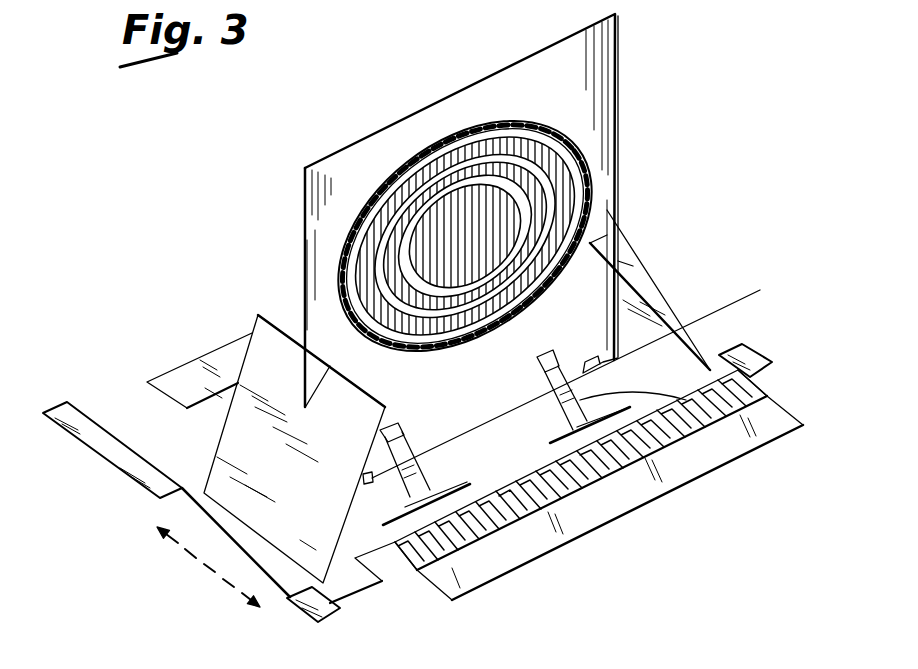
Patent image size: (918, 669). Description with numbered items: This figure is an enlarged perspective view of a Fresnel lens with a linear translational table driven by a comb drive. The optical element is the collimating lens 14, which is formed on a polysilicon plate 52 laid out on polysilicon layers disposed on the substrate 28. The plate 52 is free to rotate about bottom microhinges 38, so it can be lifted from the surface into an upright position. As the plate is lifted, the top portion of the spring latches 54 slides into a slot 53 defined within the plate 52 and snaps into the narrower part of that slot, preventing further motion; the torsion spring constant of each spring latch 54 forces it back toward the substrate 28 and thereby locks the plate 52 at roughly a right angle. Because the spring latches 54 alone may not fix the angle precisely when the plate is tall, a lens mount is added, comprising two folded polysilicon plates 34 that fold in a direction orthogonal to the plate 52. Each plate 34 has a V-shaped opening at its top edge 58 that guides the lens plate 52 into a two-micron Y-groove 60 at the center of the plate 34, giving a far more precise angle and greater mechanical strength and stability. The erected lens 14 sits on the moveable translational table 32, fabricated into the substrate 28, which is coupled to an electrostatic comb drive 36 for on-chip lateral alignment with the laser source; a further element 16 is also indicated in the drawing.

The collimating lens 14 is at (405, 102).
The polysilicon plate 52 is at (343, 163).
The slot 53 is at (600, 250).
The top edge 58 is at (259, 318).
The folded polysilicon plate 34 is at (258, 353).
The substrate 28 is at (664, 564).
The comb drive 36 is at (198, 423).
The lateral translational table 32 is at (712, 340).
The spring latch 54 is at (710, 392).
The bottom microhinge 38 is at (677, 317).
The Y-groove 60 is at (325, 368).
The housing 16 is at (751, 660).